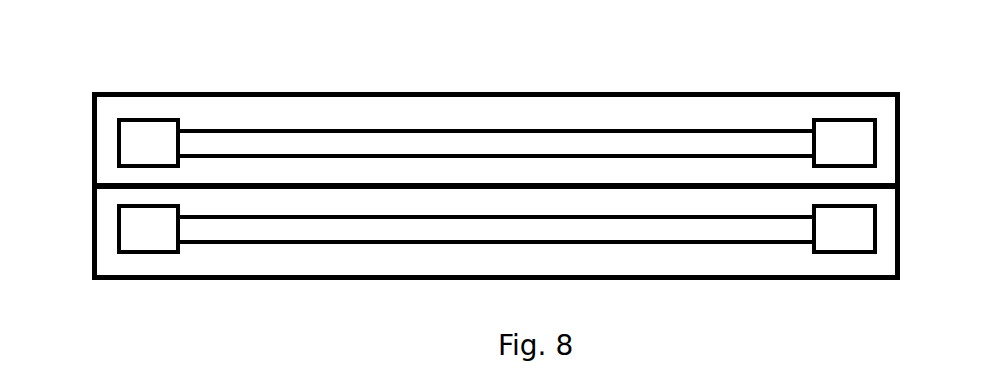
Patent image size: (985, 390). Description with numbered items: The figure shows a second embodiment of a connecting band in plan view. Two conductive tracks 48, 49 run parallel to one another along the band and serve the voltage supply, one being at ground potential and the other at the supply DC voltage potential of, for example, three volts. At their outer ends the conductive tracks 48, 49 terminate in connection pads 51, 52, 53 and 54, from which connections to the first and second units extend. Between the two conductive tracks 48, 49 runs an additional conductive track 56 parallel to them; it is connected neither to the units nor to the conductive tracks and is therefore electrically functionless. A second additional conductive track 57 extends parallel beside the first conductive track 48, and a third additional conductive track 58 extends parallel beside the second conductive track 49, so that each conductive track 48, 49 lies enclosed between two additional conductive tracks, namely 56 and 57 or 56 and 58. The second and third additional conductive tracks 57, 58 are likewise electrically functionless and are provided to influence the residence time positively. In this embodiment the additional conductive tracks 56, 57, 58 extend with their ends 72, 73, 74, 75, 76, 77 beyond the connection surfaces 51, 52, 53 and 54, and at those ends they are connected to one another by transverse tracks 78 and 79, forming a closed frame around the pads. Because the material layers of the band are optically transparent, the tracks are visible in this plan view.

The first conductive track 48 is at (520, 143).
The second conductive track 49 is at (683, 228).
The connection pad 51 is at (148, 142).
The connection pad 52 is at (157, 240).
The connection pad 53 is at (858, 140).
The connection pad 54 is at (853, 225).
The additional conductive track 56 is at (587, 185).
The second additional conductive track 57 is at (430, 93).
The third additional conductive track 58 is at (217, 275).
The end of additional conductive track 72 is at (115, 92).
The end of additional conductive track 73 is at (110, 190).
The end of additional conductive track 74 is at (112, 278).
The end of additional conductive track 75 is at (873, 93).
The end of additional conductive track 76 is at (875, 183).
The end of additional conductive track 77 is at (880, 278).
The transverse track 78 is at (92, 137).
The transverse track 79 is at (902, 200).